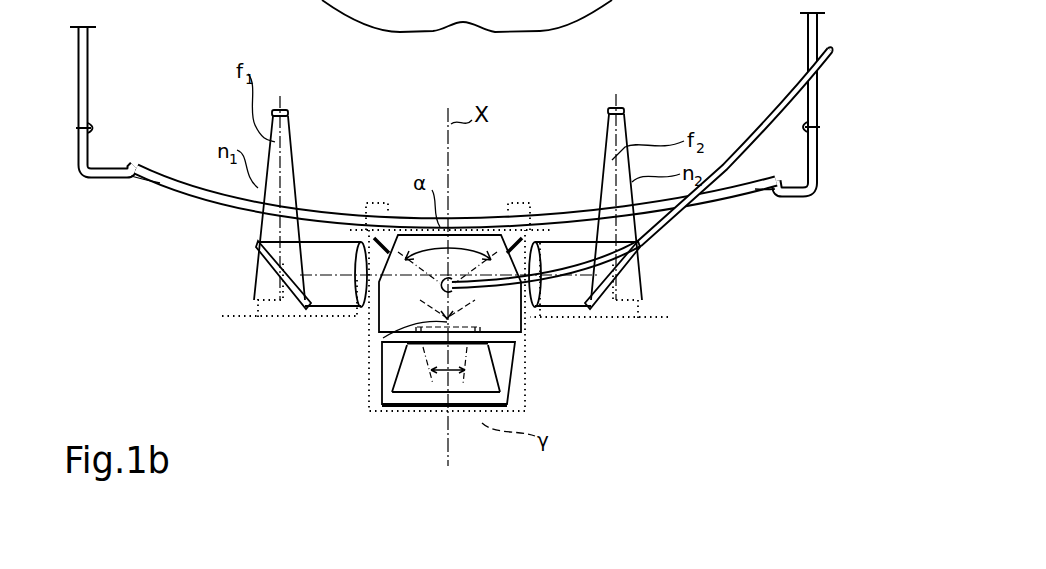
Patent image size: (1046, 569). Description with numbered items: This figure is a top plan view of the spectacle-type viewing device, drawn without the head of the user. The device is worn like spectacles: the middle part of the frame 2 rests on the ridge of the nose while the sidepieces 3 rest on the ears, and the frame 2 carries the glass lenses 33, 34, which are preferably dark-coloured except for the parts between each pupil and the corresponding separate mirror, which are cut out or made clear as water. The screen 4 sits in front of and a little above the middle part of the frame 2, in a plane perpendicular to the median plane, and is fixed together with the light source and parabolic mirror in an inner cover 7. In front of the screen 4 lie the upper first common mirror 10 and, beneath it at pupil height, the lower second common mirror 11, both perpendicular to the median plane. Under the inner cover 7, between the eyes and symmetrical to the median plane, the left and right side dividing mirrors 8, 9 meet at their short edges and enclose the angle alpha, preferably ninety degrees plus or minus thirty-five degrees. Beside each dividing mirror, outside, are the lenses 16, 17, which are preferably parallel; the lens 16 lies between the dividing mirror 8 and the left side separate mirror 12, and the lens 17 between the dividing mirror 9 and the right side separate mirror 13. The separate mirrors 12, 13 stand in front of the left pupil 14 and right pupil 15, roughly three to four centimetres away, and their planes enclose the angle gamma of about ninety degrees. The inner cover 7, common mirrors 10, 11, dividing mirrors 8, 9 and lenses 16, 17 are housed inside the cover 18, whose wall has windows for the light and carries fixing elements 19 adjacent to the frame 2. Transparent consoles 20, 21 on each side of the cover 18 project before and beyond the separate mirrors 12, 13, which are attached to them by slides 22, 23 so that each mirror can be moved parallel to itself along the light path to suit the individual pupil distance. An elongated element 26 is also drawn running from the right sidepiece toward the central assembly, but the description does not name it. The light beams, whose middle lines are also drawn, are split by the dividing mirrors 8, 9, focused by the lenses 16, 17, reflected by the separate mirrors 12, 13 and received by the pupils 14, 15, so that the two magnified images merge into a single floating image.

The frame 2 is at (147, 157).
The sidepieces 3 is at (90, 36).
The screen 4 is at (382, 327).
The inner cover 7 is at (462, 293).
The left side dividing mirror 8 is at (440, 283).
The right side dividing mirror 9 is at (470, 303).
The first common mirror 10 is at (500, 382).
The second common mirror 11 is at (375, 363).
The left side separate mirror 12 is at (257, 250).
The right side separate mirror 13 is at (642, 247).
The left pupil 14 is at (285, 112).
The right pupil 15 is at (624, 106).
The lens 16 is at (303, 310).
The lens 17 is at (524, 310).
The cover 18 is at (385, 411).
The fixing elements 19 is at (371, 202).
The left side console 20 is at (235, 316).
The right side console 21 is at (667, 318).
The slide 22 is at (273, 288).
The slide 23 is at (617, 292).
The control rod 26 is at (750, 145).
The glass lens 33 is at (145, 178).
The glass lens 34 is at (757, 193).